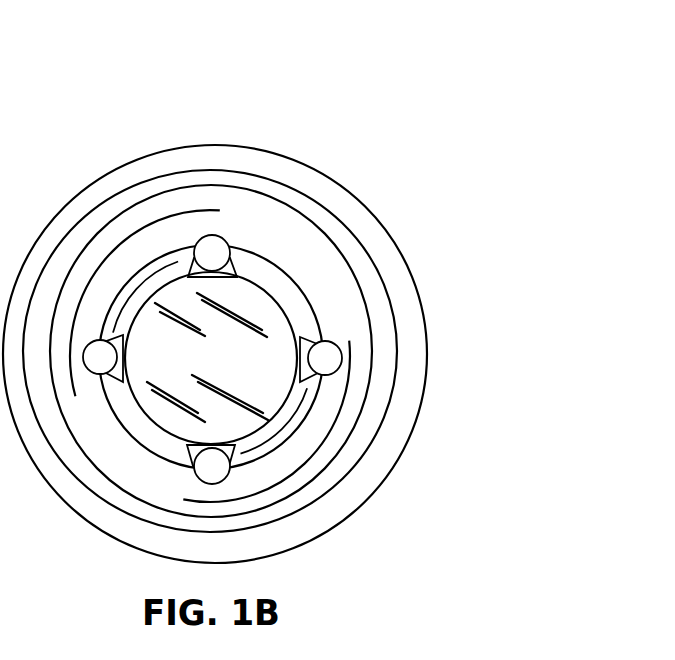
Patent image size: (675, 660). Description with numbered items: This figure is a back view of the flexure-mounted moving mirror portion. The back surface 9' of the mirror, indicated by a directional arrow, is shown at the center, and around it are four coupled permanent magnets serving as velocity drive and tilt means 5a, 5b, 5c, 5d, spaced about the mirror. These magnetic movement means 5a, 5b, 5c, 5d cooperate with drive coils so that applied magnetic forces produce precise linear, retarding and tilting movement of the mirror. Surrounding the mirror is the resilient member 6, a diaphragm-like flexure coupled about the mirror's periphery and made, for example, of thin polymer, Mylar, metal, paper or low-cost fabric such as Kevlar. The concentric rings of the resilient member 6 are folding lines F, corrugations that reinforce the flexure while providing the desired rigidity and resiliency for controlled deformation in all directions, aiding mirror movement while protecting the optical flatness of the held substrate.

The magnetic movement means 5a is at (103, 358).
The magnetic movement means 5b is at (0, 242).
The magnetic movement means 5c is at (321, 359).
The magnetic movement means 5d is at (0, 480).
The resilient member 6 is at (381, 227).
The back surface 9' is at (211, 358).
The folding lines F is at (376, 284).